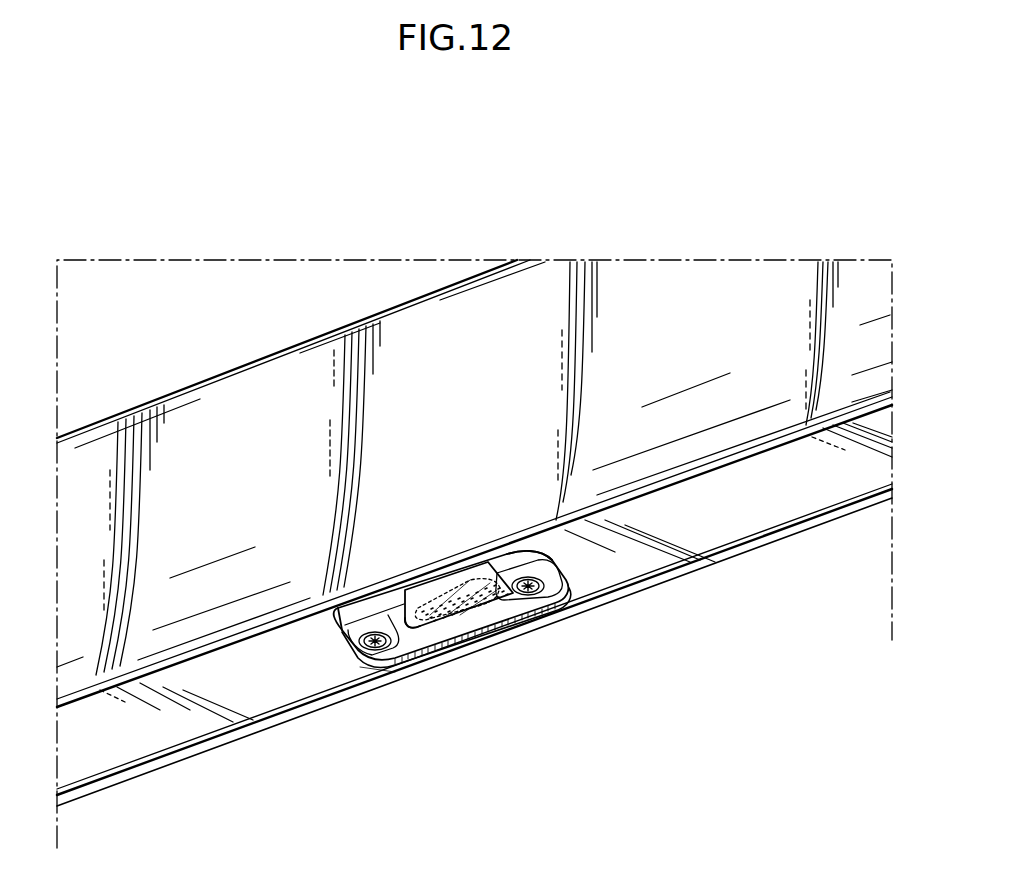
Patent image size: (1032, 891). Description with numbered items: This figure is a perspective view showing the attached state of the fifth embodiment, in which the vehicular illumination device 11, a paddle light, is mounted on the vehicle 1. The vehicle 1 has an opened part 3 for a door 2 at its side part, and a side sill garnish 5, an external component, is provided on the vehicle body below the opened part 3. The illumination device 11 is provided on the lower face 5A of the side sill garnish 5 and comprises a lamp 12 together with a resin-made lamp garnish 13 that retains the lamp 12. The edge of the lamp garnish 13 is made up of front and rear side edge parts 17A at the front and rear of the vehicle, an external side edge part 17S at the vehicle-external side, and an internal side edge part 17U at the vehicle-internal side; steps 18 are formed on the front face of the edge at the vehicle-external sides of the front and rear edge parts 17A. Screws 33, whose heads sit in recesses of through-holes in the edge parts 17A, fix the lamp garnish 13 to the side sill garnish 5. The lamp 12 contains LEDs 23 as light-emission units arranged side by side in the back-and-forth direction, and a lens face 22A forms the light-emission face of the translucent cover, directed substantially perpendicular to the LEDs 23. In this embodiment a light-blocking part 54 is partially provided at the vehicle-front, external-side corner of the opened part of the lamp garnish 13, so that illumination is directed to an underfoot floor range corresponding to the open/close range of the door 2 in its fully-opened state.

The vehicle 1 is at (296, 193).
The door 2 is at (218, 286).
The opened part 3 is at (393, 300).
The side sill garnish 5 is at (603, 316).
The lower face 5A is at (165, 738).
The vehicular illumination device 11 is at (488, 604).
The lamp 12 is at (455, 580).
The lamp garnish 13 is at (570, 592).
The front and rear side edge parts 17A is at (376, 658).
The external side edge part 17S is at (380, 603).
The internal side edge part 17U is at (487, 627).
The steps 18 is at (501, 558).
The lens face 22A is at (427, 620).
The LEDs 23 is at (438, 596).
The screw 33 is at (548, 605).
The light-blocking part 54 is at (402, 603).